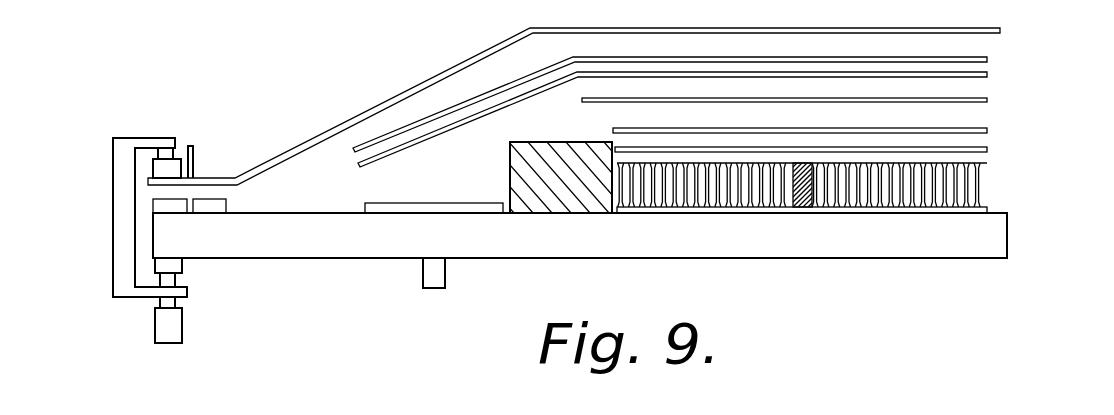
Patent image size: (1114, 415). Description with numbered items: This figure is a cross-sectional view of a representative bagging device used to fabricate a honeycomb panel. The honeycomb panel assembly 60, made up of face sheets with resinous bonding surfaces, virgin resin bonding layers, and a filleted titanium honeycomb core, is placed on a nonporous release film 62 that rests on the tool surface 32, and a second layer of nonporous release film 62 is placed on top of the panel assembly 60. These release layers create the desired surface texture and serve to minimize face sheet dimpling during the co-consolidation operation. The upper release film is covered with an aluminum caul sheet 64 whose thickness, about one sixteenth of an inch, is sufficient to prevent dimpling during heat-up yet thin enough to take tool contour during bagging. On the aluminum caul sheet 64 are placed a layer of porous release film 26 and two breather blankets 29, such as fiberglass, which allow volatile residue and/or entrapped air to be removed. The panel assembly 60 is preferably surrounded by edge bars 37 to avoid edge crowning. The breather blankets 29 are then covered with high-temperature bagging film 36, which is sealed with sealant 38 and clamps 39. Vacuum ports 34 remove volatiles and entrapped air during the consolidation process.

The porous release film 26 is at (987, 100).
The breather blankets 29 is at (987, 59).
The tool surface 32 is at (880, 245).
The vacuum ports 34 is at (423, 272).
The high-temperature bagging film 36 is at (1000, 31).
The edge bars 37 is at (511, 178).
The sealant 38 is at (152, 201).
The clamps 39 is at (122, 278).
The honeycomb panel assembly 60 is at (987, 177).
The nonporous release film 62 is at (987, 150).
The aluminum caul sheet 64 is at (987, 130).